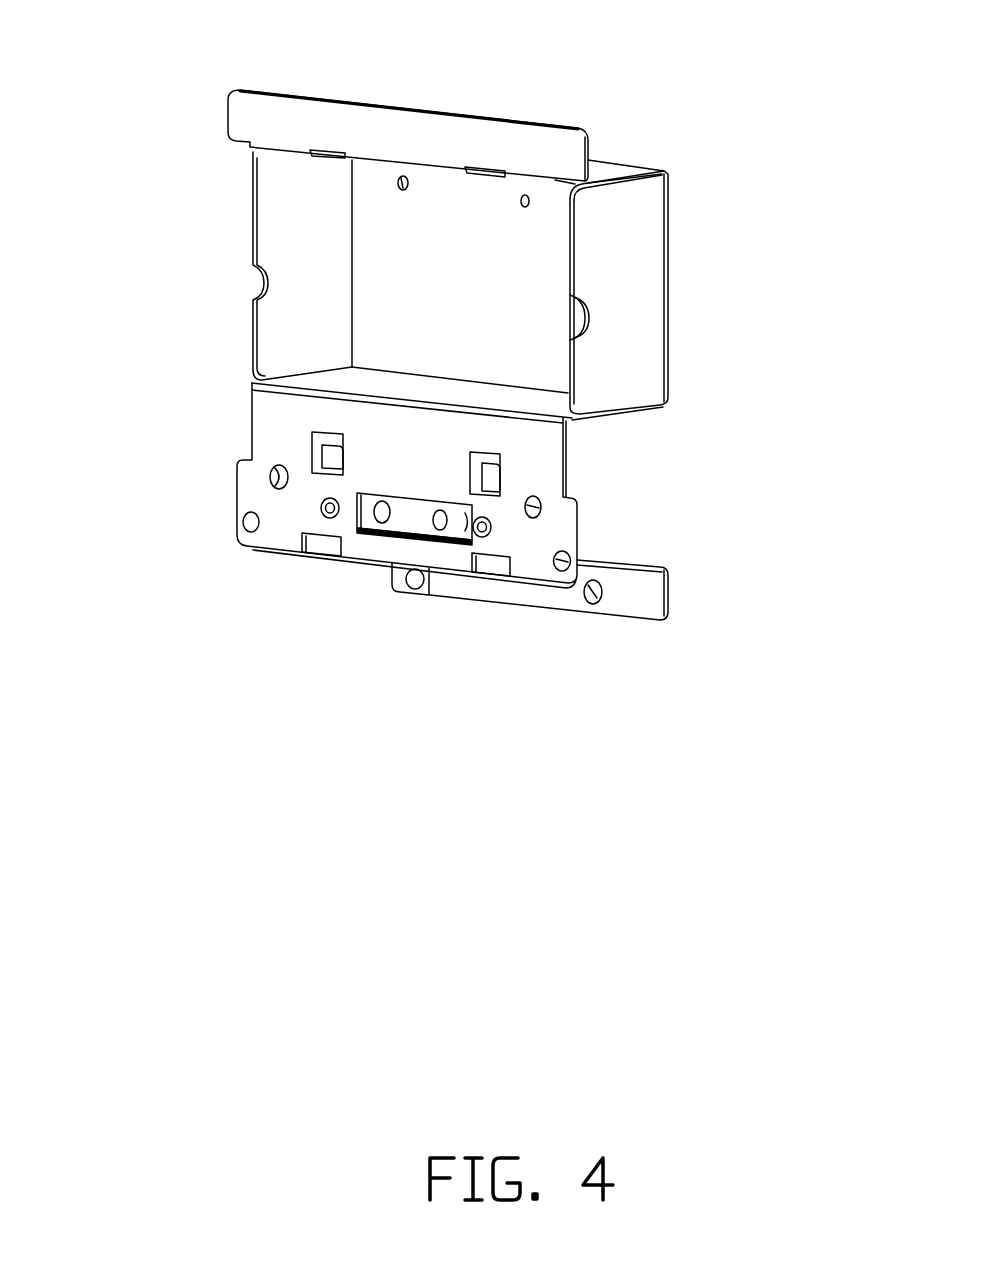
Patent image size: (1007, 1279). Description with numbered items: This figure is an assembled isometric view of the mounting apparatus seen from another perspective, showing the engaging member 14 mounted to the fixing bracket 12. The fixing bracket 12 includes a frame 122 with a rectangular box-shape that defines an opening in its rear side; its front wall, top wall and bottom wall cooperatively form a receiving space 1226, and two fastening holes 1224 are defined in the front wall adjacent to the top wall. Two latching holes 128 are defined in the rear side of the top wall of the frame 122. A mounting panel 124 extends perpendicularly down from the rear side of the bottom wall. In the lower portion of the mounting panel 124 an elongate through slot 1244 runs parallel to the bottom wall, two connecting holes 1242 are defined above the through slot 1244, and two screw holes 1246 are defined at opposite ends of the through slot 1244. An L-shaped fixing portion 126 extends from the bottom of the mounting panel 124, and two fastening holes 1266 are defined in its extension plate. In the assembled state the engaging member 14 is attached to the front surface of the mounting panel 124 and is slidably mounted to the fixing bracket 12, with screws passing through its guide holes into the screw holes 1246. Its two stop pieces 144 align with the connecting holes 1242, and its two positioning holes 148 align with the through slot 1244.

The fixing bracket 12 is at (658, 228).
The frame 122 is at (288, 213).
The fastening holes 1224 is at (405, 177).
The receiving space 1226 is at (517, 297).
The latching holes 128 is at (333, 148).
The mounting panel 124 is at (268, 447).
The connecting holes 1242 is at (325, 438).
The through slot 1244 is at (357, 517).
The screw holes 1246 is at (277, 475).
The stop pieces 144 is at (500, 478).
The engaging member 14 is at (413, 518).
The positioning holes 148 is at (432, 540).
The fixing portion 126 is at (637, 603).
The fastening holes 1266 is at (585, 600).